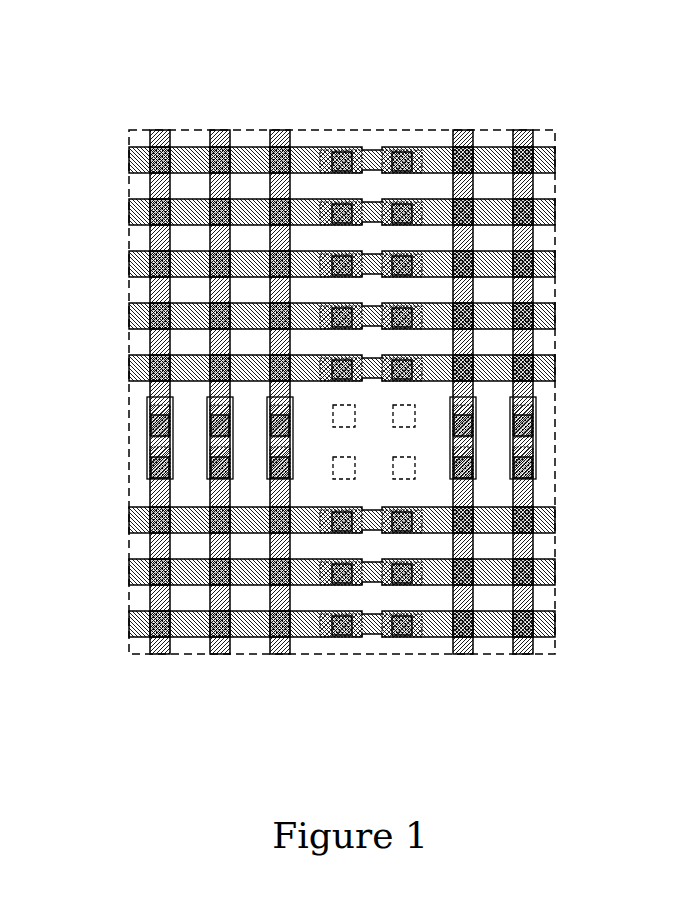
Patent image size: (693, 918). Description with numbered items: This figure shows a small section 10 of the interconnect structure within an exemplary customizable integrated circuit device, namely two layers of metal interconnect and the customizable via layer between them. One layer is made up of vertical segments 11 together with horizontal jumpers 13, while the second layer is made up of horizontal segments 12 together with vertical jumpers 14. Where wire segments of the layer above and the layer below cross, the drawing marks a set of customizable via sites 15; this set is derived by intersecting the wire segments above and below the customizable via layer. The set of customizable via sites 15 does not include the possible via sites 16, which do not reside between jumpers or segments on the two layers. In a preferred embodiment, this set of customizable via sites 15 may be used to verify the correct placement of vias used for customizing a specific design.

The section 10 is at (555, 447).
The vertical segments 11 is at (160, 130).
The horizontal segments 12 is at (555, 365).
The horizontal jumpers 13 is at (372, 147).
The vertical jumpers 14 is at (150, 437).
The customizable via sites 15 is at (150, 148).
The possible via sites 16 is at (335, 410).